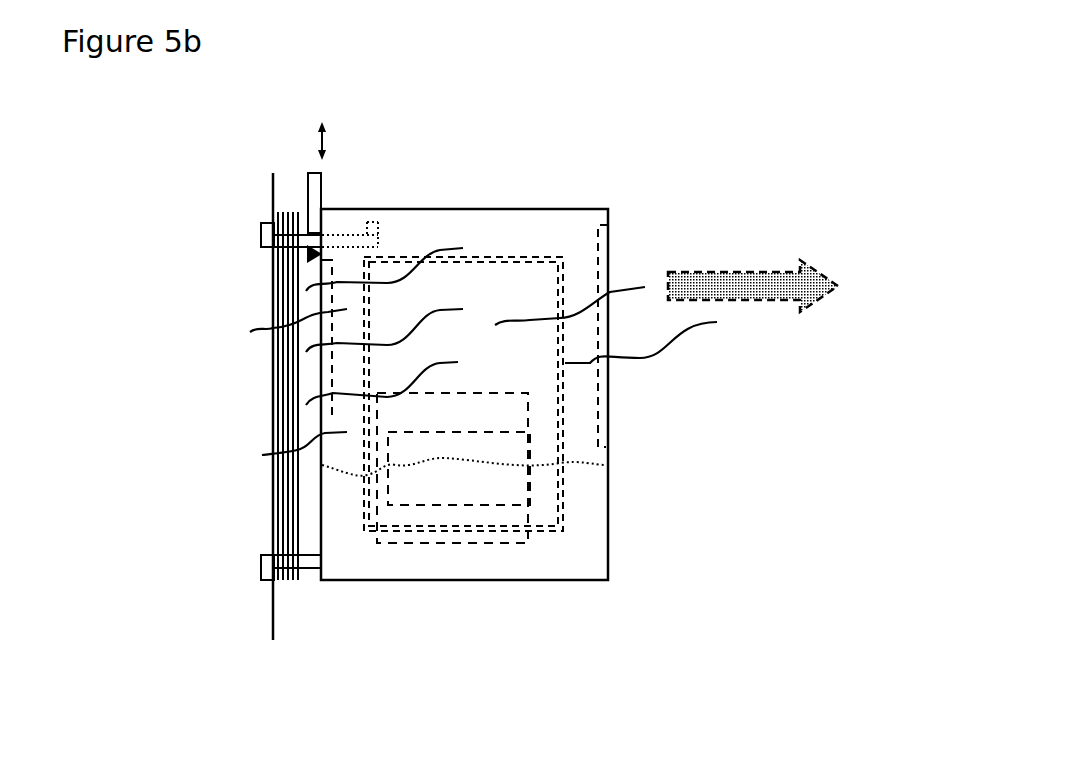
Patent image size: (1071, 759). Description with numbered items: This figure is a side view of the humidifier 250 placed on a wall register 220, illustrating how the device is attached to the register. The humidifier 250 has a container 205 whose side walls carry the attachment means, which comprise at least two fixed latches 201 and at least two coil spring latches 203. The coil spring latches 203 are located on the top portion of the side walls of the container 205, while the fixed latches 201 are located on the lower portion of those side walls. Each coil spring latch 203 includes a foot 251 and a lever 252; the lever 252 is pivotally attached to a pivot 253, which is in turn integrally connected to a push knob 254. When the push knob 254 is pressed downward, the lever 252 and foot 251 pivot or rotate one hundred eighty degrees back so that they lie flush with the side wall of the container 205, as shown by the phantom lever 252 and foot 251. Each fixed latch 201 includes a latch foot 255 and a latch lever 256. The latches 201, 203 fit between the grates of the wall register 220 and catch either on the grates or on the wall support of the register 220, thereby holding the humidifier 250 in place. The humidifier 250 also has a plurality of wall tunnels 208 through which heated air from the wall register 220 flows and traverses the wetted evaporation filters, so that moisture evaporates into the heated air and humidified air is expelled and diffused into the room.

The humidifier 250 is at (133, 152).
The fixed latch 201 is at (284, 592).
The coil spring latch 203 is at (330, 178).
The container 205 is at (618, 498).
The wall tunnel 208 is at (321, 385).
The wall register 220 is at (285, 519).
The foot 251 is at (261, 234).
The lever 252 is at (315, 252).
The pivot 253 is at (315, 252).
The push knob 254 is at (317, 171).
The latch foot 255 is at (262, 569).
The latch lever 256 is at (303, 570).